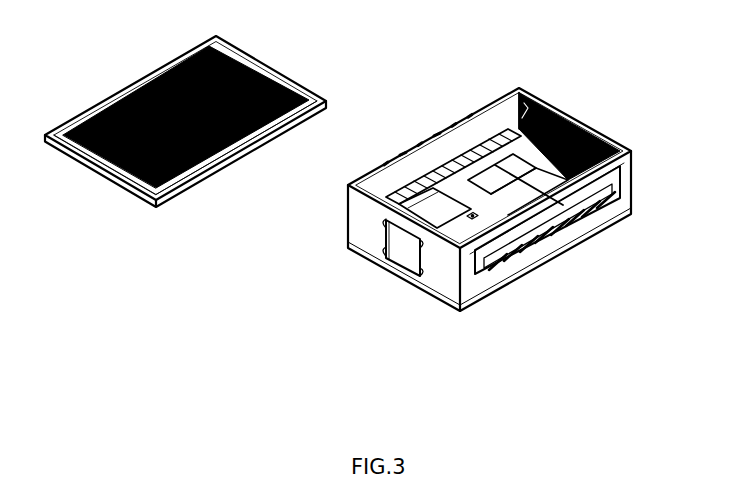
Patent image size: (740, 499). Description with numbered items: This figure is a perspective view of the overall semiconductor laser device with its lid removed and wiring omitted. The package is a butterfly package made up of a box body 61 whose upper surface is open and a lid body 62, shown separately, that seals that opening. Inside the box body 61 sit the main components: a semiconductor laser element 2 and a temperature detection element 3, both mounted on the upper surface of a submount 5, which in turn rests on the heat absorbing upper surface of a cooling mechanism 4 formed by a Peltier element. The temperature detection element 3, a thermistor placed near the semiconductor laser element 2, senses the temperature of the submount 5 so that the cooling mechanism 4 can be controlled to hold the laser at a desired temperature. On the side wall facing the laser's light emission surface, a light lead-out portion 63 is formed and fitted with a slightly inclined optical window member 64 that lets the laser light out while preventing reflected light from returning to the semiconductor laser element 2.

The semiconductor laser element 2 is at (453, 197).
The temperature detection element 3 is at (461, 210).
The cooling mechanism 4 is at (507, 172).
The submount 5 is at (482, 188).
The box body 61 is at (623, 167).
The lid body 62 is at (116, 82).
The light lead-out portion 63 is at (420, 238).
The optical window member 64 is at (377, 233).